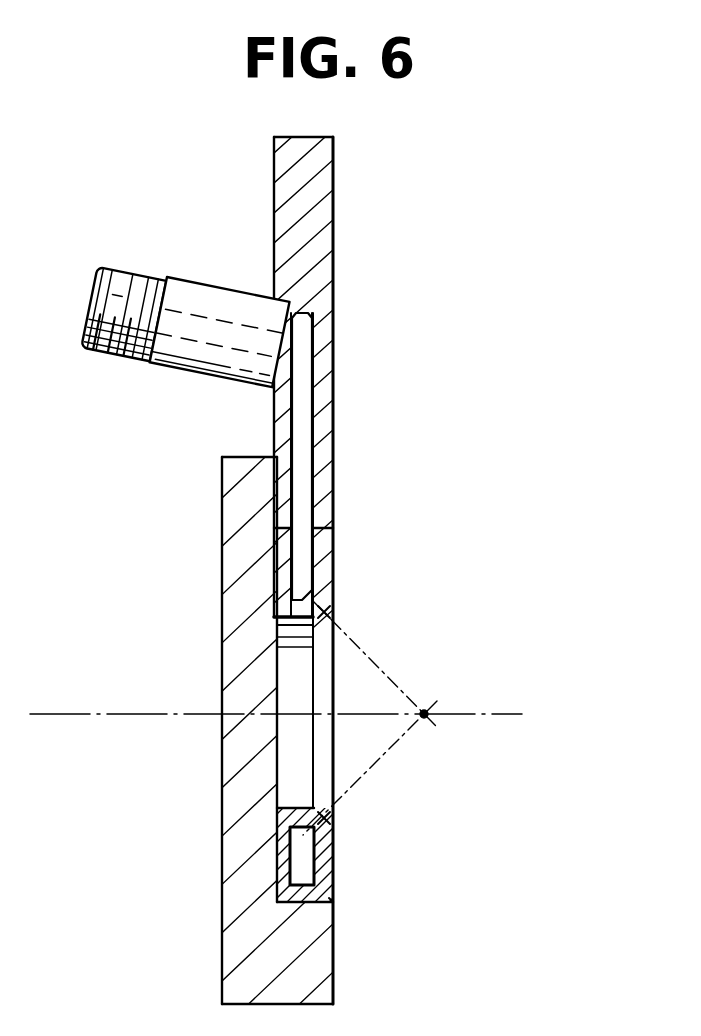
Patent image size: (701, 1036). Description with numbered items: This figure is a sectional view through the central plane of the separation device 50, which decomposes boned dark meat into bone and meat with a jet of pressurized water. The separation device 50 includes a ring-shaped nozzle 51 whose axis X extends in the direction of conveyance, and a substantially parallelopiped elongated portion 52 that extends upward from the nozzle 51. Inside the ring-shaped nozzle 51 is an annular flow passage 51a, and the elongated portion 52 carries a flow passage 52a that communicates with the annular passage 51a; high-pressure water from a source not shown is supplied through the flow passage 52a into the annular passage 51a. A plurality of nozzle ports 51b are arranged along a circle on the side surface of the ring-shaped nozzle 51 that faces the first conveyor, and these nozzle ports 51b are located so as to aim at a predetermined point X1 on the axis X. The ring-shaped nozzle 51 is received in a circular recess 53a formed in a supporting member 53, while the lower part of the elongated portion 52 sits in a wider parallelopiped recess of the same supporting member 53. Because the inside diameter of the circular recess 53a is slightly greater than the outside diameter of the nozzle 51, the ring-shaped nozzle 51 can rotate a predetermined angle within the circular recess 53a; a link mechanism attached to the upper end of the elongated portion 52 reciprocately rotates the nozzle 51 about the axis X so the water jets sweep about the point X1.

The separation device 50 is at (376, 251).
The ring-shaped nozzle 51 is at (334, 570).
The annular flow passage 51a is at (304, 864).
The nozzle ports 51b is at (326, 612).
The elongated portion 52 is at (334, 335).
The flow passage 52a is at (312, 416).
The supporting member 53 is at (223, 820).
The circular recess 53a is at (333, 901).
The axis X is at (75, 713).
The predetermined point X1 is at (429, 711).